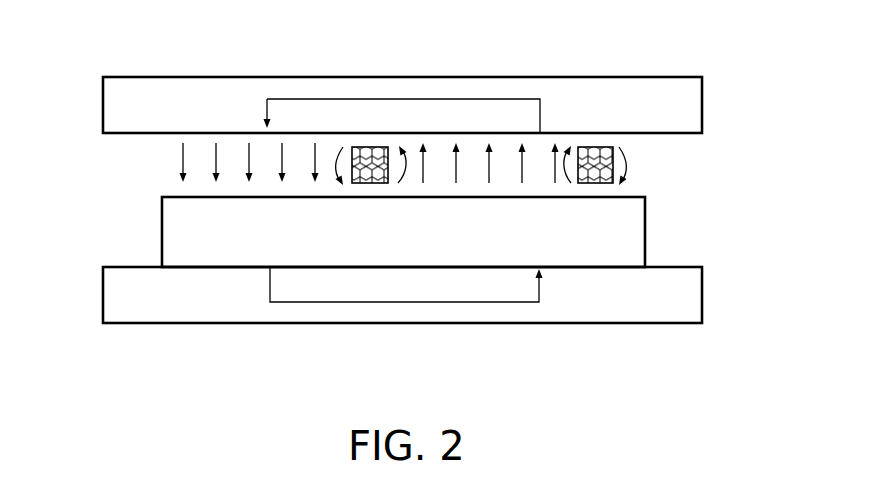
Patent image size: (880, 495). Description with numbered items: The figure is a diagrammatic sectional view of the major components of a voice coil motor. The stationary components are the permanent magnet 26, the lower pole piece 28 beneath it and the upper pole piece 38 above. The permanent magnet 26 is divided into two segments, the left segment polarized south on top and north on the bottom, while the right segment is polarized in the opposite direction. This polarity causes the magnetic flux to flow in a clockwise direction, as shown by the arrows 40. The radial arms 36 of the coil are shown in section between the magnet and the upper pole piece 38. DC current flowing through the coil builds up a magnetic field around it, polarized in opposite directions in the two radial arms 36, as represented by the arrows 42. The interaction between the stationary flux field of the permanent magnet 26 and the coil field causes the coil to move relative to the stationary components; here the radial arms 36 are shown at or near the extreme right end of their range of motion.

The permanent magnet 26 is at (646, 226).
The lower pole piece 28 is at (704, 288).
The radial arms 36 is at (369, 148).
The upper pole piece 38 is at (704, 102).
The arrows 40 is at (178, 158).
The arrows 42 is at (403, 151).